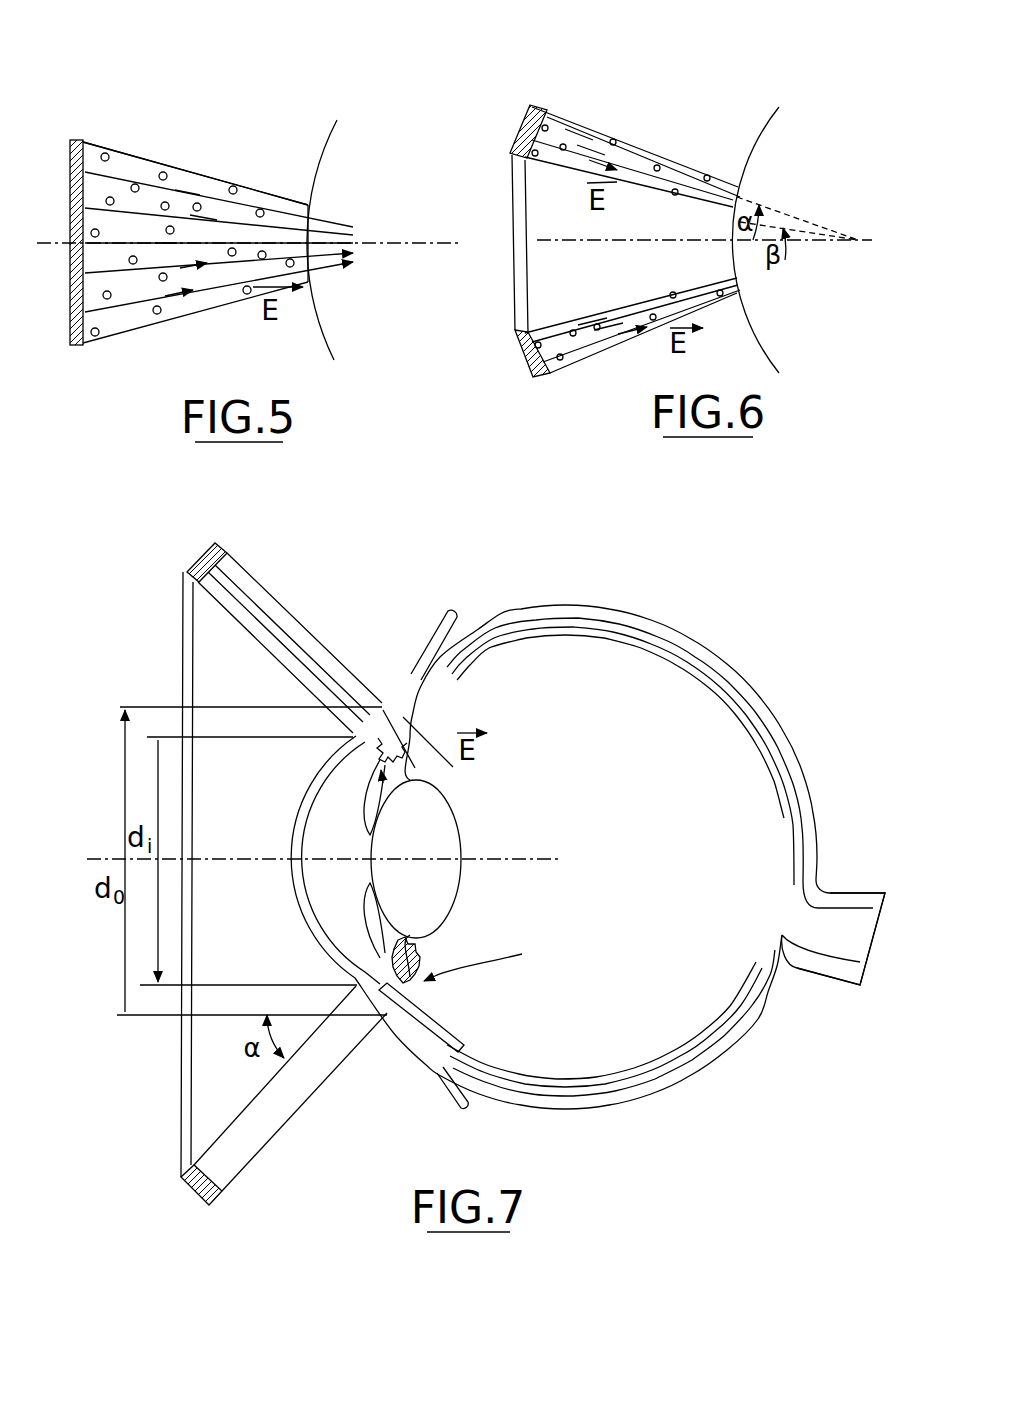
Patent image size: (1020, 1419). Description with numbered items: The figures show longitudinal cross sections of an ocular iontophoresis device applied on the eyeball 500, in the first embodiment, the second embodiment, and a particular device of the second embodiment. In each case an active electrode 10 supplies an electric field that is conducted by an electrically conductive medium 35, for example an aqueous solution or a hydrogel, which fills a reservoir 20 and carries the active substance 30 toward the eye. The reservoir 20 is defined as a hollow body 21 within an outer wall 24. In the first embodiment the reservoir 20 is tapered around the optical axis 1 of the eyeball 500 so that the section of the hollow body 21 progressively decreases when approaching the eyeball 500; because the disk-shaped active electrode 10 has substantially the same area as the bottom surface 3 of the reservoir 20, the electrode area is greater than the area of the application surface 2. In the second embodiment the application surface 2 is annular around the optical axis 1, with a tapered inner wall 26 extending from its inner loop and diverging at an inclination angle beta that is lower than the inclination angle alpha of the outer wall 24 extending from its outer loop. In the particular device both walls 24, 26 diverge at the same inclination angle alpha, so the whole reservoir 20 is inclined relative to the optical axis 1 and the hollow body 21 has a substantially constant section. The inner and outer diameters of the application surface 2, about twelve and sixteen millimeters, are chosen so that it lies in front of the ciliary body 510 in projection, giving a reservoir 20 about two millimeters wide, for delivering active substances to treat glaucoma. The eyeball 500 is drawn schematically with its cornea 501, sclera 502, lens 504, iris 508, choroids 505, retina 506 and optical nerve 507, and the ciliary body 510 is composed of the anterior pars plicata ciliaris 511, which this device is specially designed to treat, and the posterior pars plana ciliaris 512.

In FIG. 5, the optical axis 1 is at (425, 243).
In FIG. 6, the optical axis 1 is at (858, 240).
In FIG. 7, the optical axis 1 is at (517, 857).
In FIG. 5, the application surface 2 is at (310, 217).
In FIG. 6, the application surface 2 is at (737, 200).
In FIG. 7, the application surface 2 is at (365, 720).
In FIG. 5, the bottom surface 3 is at (88, 146).
In FIG. 7, the bottom surface 3 is at (237, 562).
In FIG. 5, the active electrode 10 is at (70, 178).
In FIG. 6, the active electrode 10 is at (523, 130).
In FIG. 7, the active electrode 10 is at (193, 562).
In FIG. 5, the reservoir 20 is at (171, 206).
In FIG. 6, the reservoir 20 is at (602, 233).
In FIG. 7, the reservoir 20 is at (260, 848).
In FIG. 5, the hollow body 21 is at (219, 280).
In FIG. 6, the hollow body 21 is at (705, 298).
In FIG. 7, the hollow body 21 is at (307, 652).
In FIG. 5, the outer wall 24 is at (260, 188).
In FIG. 6, the outer wall 24 is at (543, 110).
In FIG. 7, the outer wall 24 is at (287, 1127).
In FIG. 6, the inner wall 26 is at (633, 188).
In FIG. 7, the inner wall 26 is at (232, 1117).
In FIG. 5, the active substance 30 is at (135, 188).
In FIG. 6, the active substance 30 is at (557, 373).
In FIG. 5, the medium 35 is at (118, 322).
In FIG. 6, the medium 35 is at (583, 345).
In FIG. 5, the eyeball 500 is at (390, 160).
In FIG. 6, the eyeball 500 is at (787, 110).
In FIG. 7, the eyeball 500 is at (558, 852).
In FIG. 7, the cornea 501 is at (293, 837).
In FIG. 7, the sclera 502 is at (623, 1100).
In FIG. 7, the lens 504 is at (373, 865).
In FIG. 7, the choroids 505 is at (693, 1062).
In FIG. 7, the retina 506 is at (747, 1002).
In FIG. 7, the optical nerve 507 is at (845, 905).
In FIG. 7, the iris 508 is at (367, 913).
In FIG. 7, the ciliary body 510 is at (496, 954).
In FIG. 7, the anterior pars plicata ciliaris 511 is at (412, 970).
In FIG. 7, the posterior pars plana ciliaris 512 is at (433, 1015).